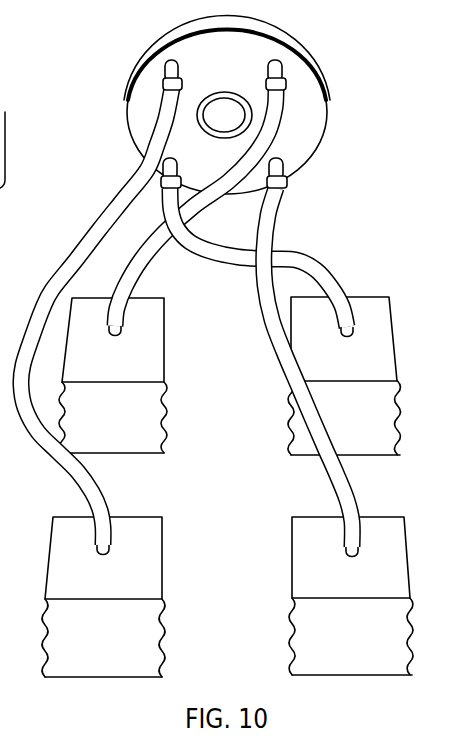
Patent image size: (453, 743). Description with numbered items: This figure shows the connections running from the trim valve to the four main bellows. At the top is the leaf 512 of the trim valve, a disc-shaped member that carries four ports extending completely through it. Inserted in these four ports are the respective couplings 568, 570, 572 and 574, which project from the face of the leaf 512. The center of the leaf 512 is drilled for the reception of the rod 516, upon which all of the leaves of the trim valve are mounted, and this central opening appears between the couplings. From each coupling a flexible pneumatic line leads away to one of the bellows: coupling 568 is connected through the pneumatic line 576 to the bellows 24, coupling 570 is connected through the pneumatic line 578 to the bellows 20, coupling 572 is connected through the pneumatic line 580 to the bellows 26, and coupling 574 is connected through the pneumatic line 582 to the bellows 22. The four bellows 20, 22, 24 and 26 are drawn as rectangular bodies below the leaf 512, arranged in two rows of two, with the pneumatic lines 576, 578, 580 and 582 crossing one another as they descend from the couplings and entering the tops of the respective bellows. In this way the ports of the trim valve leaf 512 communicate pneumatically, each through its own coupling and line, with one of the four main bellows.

The leaf 512 is at (126, 124).
The rod 516 is at (234, 106).
The coupling 574 is at (165, 71).
The coupling 572 is at (283, 75).
The coupling 570 is at (177, 172).
The coupling 568 is at (283, 172).
The pneumatic line 580 is at (134, 278).
The pneumatic line 582 is at (92, 488).
The pneumatic line 578 is at (321, 279).
The pneumatic line 576 is at (347, 492).
The bellows 26 is at (157, 350).
The bellows 24 is at (385, 350).
The bellows 22 is at (155, 567).
The bellows 20 is at (402, 569).